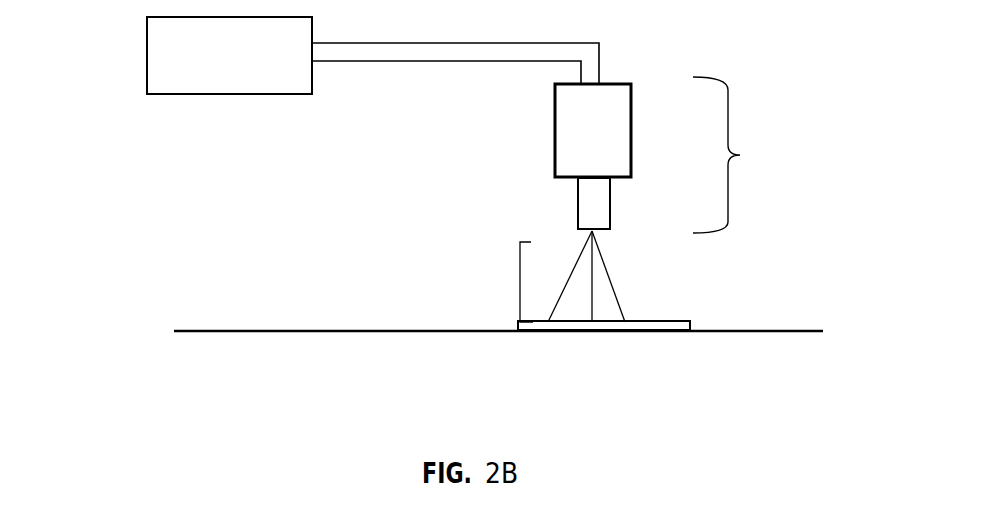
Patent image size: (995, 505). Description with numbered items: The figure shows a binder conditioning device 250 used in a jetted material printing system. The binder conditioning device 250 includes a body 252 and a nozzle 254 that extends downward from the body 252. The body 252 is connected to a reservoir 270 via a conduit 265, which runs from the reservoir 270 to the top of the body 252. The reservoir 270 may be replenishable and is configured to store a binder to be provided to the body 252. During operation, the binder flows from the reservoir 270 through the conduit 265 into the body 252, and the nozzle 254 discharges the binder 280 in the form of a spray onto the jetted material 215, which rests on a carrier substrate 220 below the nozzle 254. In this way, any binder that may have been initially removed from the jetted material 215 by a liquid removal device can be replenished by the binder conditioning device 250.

The reservoir 270 is at (147, 56).
The conduit 265 is at (416, 62).
The binder conditioning device 250 is at (740, 155).
The body 252 is at (632, 128).
The nozzle 254 is at (610, 203).
The binder 280 is at (520, 282).
The jetted material 215 is at (640, 321).
The carrier substrate 220 is at (702, 333).